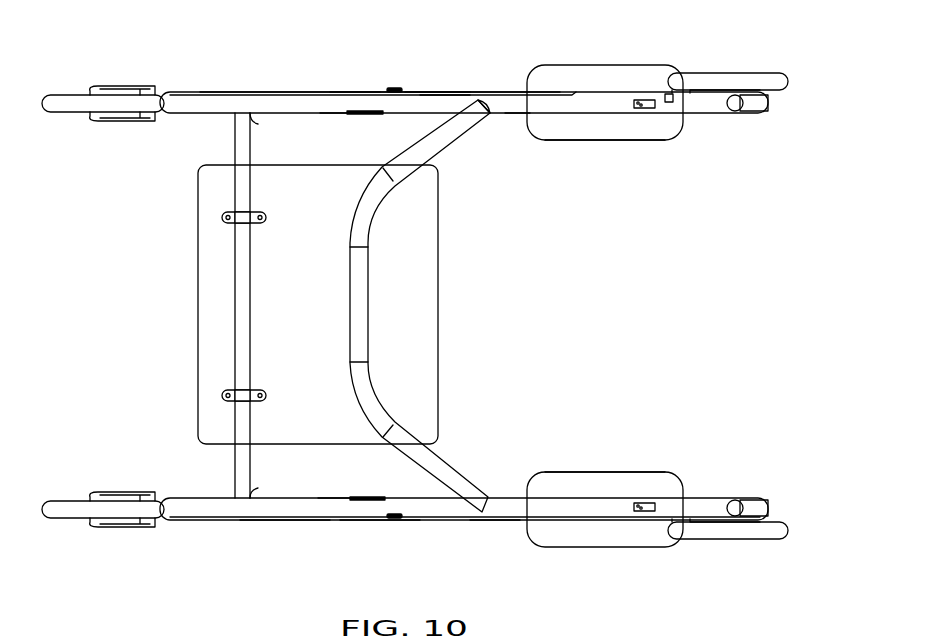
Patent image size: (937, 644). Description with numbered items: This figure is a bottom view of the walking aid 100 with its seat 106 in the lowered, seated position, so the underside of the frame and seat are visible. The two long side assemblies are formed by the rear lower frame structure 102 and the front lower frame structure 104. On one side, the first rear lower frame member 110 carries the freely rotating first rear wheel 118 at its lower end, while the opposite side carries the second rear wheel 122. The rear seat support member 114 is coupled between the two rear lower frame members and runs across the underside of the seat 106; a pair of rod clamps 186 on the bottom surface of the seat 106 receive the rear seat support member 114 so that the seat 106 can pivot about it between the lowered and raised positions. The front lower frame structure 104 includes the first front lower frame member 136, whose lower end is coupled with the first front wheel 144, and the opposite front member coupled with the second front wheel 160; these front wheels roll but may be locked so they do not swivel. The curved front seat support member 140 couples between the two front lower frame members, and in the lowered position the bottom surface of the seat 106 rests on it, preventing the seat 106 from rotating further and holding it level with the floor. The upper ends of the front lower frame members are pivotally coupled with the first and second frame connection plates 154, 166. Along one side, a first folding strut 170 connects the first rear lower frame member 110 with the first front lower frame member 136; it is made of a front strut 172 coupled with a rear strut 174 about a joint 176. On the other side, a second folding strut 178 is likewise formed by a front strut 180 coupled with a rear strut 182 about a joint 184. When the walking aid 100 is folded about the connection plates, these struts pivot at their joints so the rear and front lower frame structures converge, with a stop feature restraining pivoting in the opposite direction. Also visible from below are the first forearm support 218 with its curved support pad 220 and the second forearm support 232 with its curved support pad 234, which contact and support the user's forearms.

The walking aid 100 is at (116, 286).
The rear lower frame structure 102 is at (238, 82).
The front lower frame structure 104 is at (500, 120).
The seat 106 is at (430, 296).
The first rear lower frame member 110 is at (221, 103).
The rear seat support member 114 is at (252, 320).
The first rear wheel 118 is at (74, 103).
The second rear wheel 122 is at (74, 510).
The first front lower frame member 136 is at (515, 114).
The front seat support member 140 is at (428, 143).
The first front wheel 144 is at (752, 79).
The first frame connection plates 154 is at (338, 116).
The second front wheel 160 is at (768, 527).
The second frame connection plates 166 is at (358, 497).
The first folding strut 170 is at (420, 85).
The front strut 172 is at (437, 98).
The rear strut 174 is at (348, 92).
The joint 176 is at (392, 88).
The second folding strut 178 is at (382, 528).
The front strut 180 is at (488, 521).
The rear strut 182 is at (288, 521).
The joint 184 is at (393, 525).
The rod clamps 186 is at (245, 219).
The first forearm support 218 is at (610, 62).
The curved support pad 220 is at (598, 140).
The second forearm support 232 is at (650, 452).
The curved support pad 234 is at (552, 478).